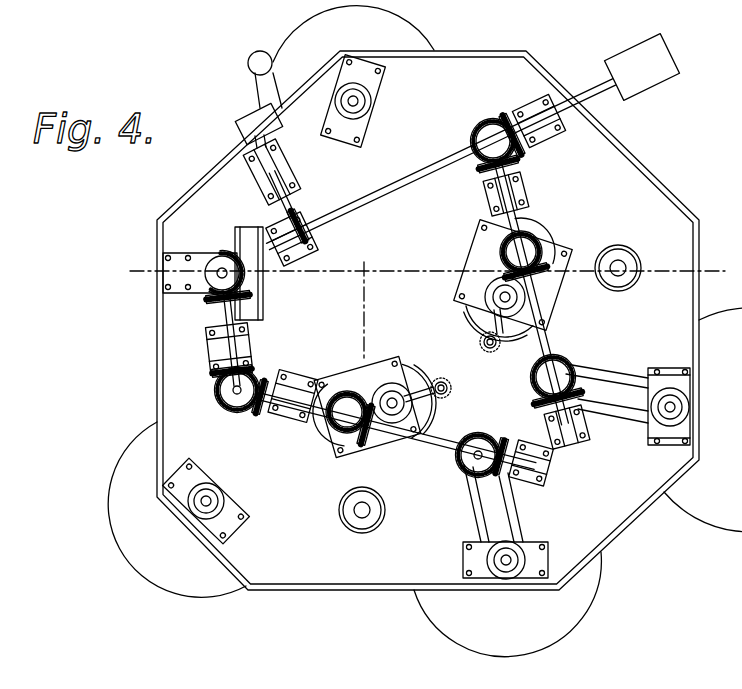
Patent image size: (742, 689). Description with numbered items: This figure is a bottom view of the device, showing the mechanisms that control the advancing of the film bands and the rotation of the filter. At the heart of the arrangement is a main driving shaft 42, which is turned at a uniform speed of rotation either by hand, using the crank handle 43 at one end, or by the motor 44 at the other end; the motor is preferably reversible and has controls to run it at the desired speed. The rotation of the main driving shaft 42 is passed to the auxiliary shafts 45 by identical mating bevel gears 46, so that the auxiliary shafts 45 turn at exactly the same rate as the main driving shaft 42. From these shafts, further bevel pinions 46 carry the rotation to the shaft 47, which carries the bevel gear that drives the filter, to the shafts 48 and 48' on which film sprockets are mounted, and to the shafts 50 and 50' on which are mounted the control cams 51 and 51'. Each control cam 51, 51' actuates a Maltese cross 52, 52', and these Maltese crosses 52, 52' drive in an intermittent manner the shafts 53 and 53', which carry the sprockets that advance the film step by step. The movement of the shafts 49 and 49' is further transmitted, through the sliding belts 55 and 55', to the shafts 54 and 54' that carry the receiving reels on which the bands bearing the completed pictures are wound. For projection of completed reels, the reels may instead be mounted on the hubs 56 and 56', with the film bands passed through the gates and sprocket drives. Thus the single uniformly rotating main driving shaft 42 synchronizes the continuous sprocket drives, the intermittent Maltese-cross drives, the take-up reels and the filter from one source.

The main driving shaft 42 is at (407, 188).
The crank handle 43 is at (250, 62).
The motor 44 is at (654, 88).
The auxiliary shaft 45 is at (550, 327).
The bevel gear 46 is at (518, 155).
The shaft 47 is at (213, 280).
The shaft 48 is at (491, 130).
The shaft 48' is at (222, 391).
The shaft 49 is at (567, 371).
The shaft 49' is at (464, 460).
The shaft 50 is at (506, 252).
The shaft 50' is at (335, 429).
The control cam 51 is at (513, 262).
The control cam 51' is at (348, 406).
The Maltese cross 52 is at (484, 309).
The Maltese cross 52' is at (422, 400).
The shaft 53 is at (473, 331).
The shaft 53' is at (443, 383).
The shaft 54 is at (689, 406).
The shaft 54' is at (505, 578).
The sliding belt 55 is at (607, 403).
The sliding belt 55' is at (508, 503).
The hub 56 is at (361, 101).
The hub 56' is at (208, 497).